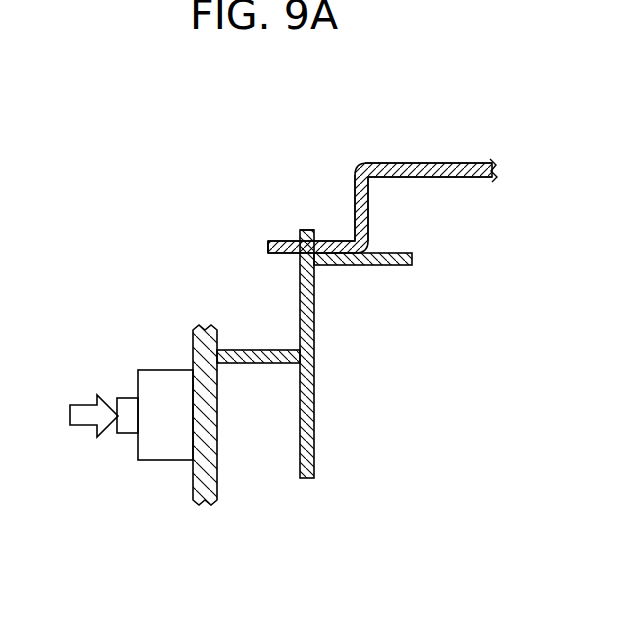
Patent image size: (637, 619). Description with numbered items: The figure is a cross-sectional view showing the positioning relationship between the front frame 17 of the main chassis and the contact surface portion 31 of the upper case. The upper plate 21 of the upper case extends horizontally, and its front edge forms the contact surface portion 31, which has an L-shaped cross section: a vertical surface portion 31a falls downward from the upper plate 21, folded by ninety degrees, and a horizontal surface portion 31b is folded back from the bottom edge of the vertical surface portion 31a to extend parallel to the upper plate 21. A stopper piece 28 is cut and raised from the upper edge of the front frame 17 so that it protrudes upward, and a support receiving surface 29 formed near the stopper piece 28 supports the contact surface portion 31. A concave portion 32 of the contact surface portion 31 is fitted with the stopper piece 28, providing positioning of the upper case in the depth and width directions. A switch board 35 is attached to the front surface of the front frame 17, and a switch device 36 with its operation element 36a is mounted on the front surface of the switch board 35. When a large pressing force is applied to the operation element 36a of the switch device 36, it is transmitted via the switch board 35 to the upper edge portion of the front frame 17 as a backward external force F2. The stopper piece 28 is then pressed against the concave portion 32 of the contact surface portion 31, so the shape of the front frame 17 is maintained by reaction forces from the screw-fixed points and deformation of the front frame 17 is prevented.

The front frame 17 is at (314, 320).
The upper plate 21 is at (459, 162).
The stopper piece 28 is at (305, 230).
The support receiving surface 29 is at (393, 265).
The contact surface portion 31 is at (376, 157).
The vertical surface portion 31a is at (355, 200).
The horizontal surface portion 31b is at (330, 241).
The concave portion 32 is at (267, 247).
The switch board 35 is at (193, 487).
The switch device 36 is at (160, 373).
The operation element 36a is at (128, 398).
The backward external force F2 is at (77, 416).